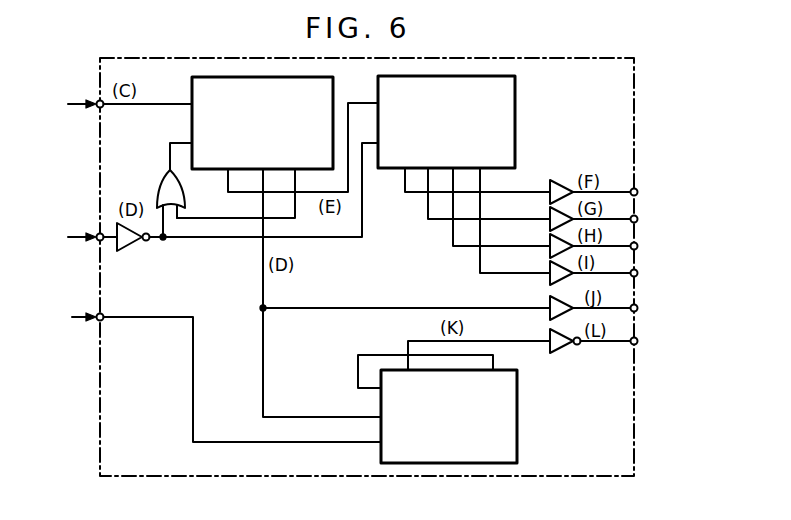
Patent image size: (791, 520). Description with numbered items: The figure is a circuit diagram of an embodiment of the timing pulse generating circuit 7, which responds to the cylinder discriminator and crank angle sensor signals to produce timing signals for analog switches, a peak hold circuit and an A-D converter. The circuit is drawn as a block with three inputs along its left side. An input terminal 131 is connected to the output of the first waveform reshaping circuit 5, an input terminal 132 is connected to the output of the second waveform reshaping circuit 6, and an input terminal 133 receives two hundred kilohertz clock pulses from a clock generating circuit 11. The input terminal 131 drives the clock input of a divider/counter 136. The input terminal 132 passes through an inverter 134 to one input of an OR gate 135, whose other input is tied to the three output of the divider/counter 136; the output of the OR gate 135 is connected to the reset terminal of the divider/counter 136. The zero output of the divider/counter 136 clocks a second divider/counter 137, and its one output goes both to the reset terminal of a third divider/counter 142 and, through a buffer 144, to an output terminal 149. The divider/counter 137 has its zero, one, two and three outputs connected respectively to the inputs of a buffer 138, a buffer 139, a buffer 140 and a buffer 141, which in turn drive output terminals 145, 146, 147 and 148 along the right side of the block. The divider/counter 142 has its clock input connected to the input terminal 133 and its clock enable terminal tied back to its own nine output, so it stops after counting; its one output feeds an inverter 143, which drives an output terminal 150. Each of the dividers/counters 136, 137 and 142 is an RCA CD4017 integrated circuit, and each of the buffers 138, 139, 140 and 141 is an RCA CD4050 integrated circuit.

The timing pulse generating circuit 7 is at (635, 112).
The first waveform reshaping circuit 5 is at (72, 104).
The second waveform reshaping circuit 6 is at (72, 237).
The clock generating circuit 11 is at (71, 317).
The input terminal 131 is at (98, 102).
The input terminal 132 is at (98, 235).
The input terminal 133 is at (98, 316).
The inverter 134 is at (136, 246).
The OR gate 135 is at (160, 190).
The divider/counter 136 is at (193, 79).
The divider/counter 137 is at (516, 100).
The buffer 138 is at (549, 188).
The buffer 139 is at (549, 215).
The buffer 140 is at (549, 242).
The buffer 141 is at (549, 269).
The divider/counter 142 is at (518, 398).
The inverter 143 is at (549, 338).
The buffer 144 is at (549, 304).
The output terminal 145 is at (638, 192).
The output terminal 146 is at (638, 219).
The output terminal 147 is at (638, 246).
The output terminal 148 is at (638, 273).
The output terminal 149 is at (638, 308).
The output terminal 150 is at (638, 341).